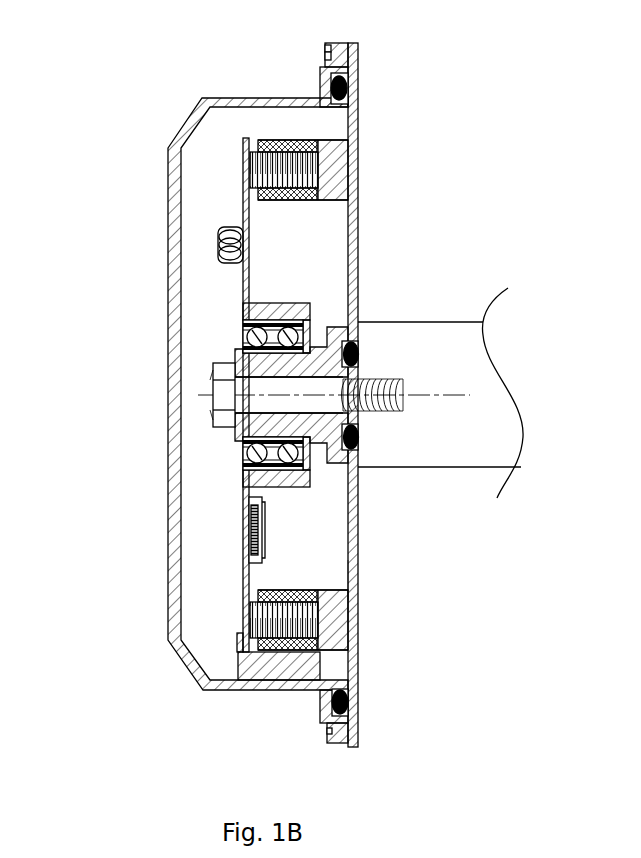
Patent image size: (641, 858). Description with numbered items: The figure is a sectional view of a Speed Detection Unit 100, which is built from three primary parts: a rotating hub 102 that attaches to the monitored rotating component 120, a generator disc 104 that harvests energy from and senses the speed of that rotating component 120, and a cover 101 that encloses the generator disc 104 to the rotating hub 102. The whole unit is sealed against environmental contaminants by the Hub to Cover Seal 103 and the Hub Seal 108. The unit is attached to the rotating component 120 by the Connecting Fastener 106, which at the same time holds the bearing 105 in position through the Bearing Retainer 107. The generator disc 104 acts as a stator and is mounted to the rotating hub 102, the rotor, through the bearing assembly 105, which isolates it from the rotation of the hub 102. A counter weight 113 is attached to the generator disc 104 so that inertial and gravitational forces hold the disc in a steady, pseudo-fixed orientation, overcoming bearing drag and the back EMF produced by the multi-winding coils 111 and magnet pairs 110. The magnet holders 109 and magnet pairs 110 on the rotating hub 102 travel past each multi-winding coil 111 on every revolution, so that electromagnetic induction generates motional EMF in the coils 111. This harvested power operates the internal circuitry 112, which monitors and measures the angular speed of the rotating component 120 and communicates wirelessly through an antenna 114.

The Speed Detection Unit 100 is at (128, 396).
The cover 101 is at (167, 148).
The rotating hub 102 is at (358, 117).
The Hub to Cover Seal 103 is at (350, 77).
The generator disc 104 is at (240, 188).
The bearing 105 is at (302, 320).
The Connecting Fastener 106 is at (213, 365).
The Bearing Retainer 107 is at (230, 348).
The Hub Seal 108 is at (356, 342).
The magnet holder 109 is at (342, 585).
The magnet pairs 110 is at (320, 635).
The multi-winding coil 111 is at (250, 600).
The internal circuitry 112 is at (250, 497).
The counter weight 113 is at (322, 668).
The antenna 114 is at (218, 230).
The rotating component 120 is at (455, 468).